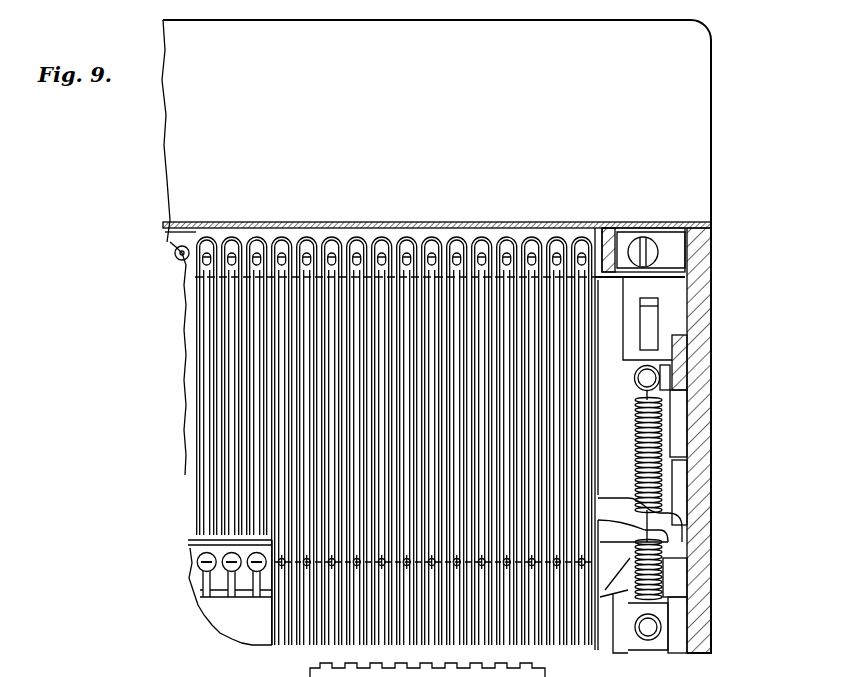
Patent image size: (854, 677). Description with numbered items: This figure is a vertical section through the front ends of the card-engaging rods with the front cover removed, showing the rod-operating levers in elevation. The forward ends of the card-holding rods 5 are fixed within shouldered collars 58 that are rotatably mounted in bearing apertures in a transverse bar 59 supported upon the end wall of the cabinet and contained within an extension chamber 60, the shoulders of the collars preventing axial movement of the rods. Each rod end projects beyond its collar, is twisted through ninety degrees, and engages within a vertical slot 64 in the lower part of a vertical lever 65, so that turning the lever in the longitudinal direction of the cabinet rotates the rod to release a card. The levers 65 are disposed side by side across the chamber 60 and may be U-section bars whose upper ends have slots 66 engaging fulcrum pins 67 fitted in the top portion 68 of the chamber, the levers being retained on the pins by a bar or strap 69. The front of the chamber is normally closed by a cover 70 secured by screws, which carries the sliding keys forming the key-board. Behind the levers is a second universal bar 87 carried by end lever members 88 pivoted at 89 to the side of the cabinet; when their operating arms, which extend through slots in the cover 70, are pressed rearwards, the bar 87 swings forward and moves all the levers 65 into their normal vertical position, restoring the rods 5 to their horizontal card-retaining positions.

The card-holding rods 5 is at (255, 573).
The shouldered collars 58 is at (188, 558).
The transverse bar 59 is at (193, 575).
The extension chamber 60 is at (613, 307).
The vertical slot 64 is at (310, 571).
The vertical lever 65 is at (255, 423).
The slots 66 is at (232, 268).
The fulcrum pins 67 is at (430, 240).
The top portion 68 is at (667, 232).
The bar or strap 69 is at (595, 232).
The cover 70 is at (712, 484).
The second universal bar 87 is at (610, 508).
The end lever members 88 is at (680, 415).
The pivot 89 is at (665, 383).